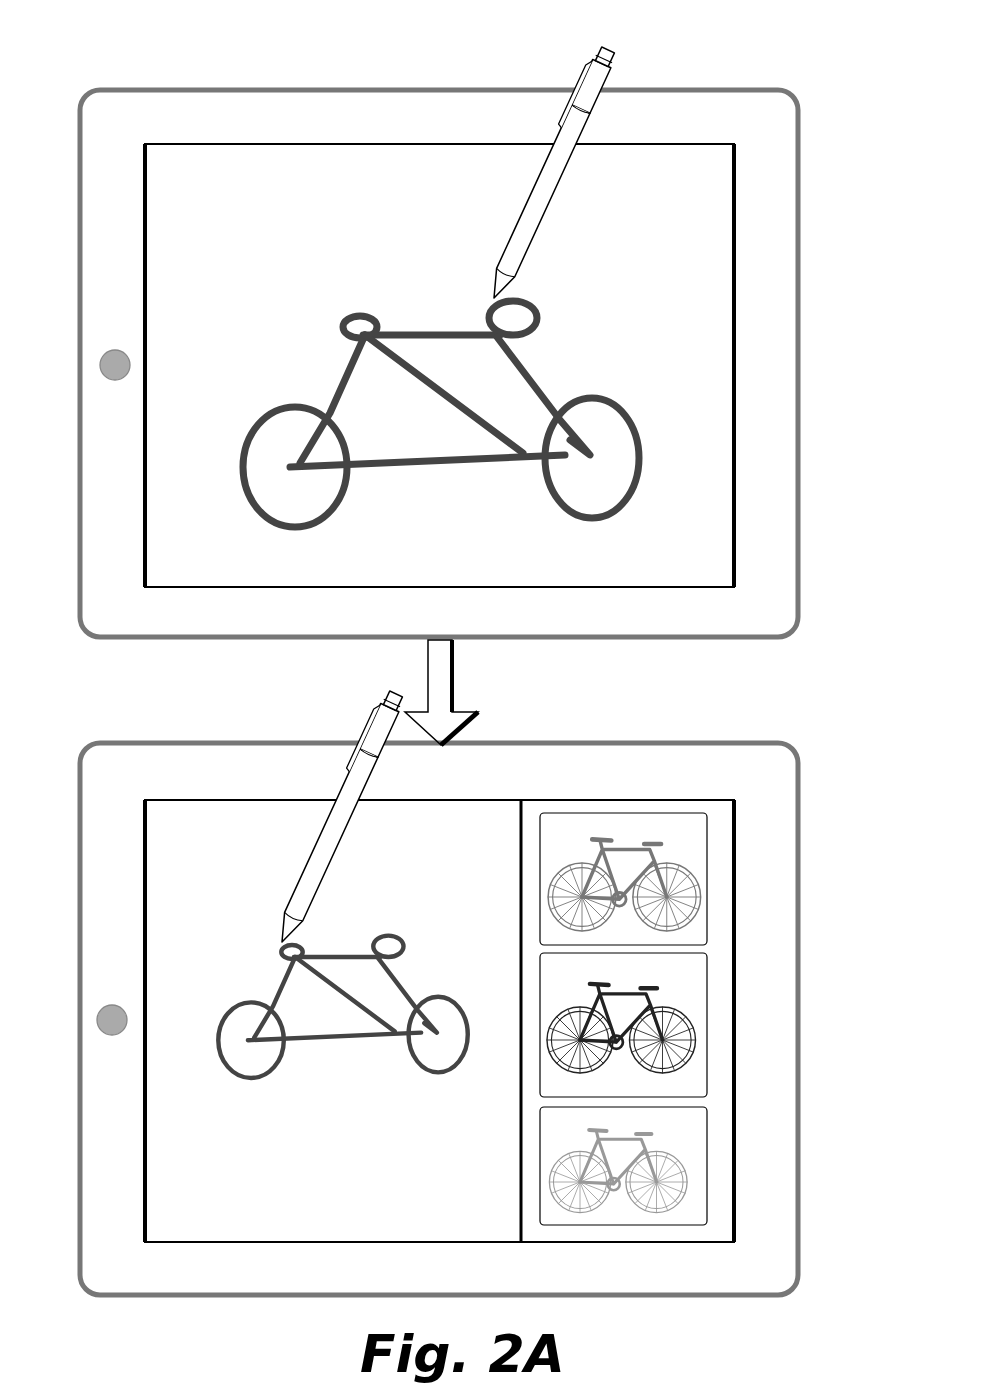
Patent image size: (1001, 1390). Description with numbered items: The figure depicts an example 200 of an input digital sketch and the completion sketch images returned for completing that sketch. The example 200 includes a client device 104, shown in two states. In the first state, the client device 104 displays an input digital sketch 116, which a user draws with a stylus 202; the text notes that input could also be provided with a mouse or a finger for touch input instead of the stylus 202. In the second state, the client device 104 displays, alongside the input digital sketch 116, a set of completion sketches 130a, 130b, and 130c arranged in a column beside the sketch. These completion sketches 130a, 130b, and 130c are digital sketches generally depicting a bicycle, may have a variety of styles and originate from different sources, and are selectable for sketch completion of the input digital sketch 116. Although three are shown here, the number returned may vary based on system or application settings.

The example 200 is at (106, 50).
The stylus 202 is at (581, 76).
The client device 104 is at (460, 622).
The input digital sketch 116 is at (460, 489).
The completion sketch 130a is at (682, 852).
The completion sketch 130b is at (682, 993).
The completion sketch 130c is at (682, 1148).